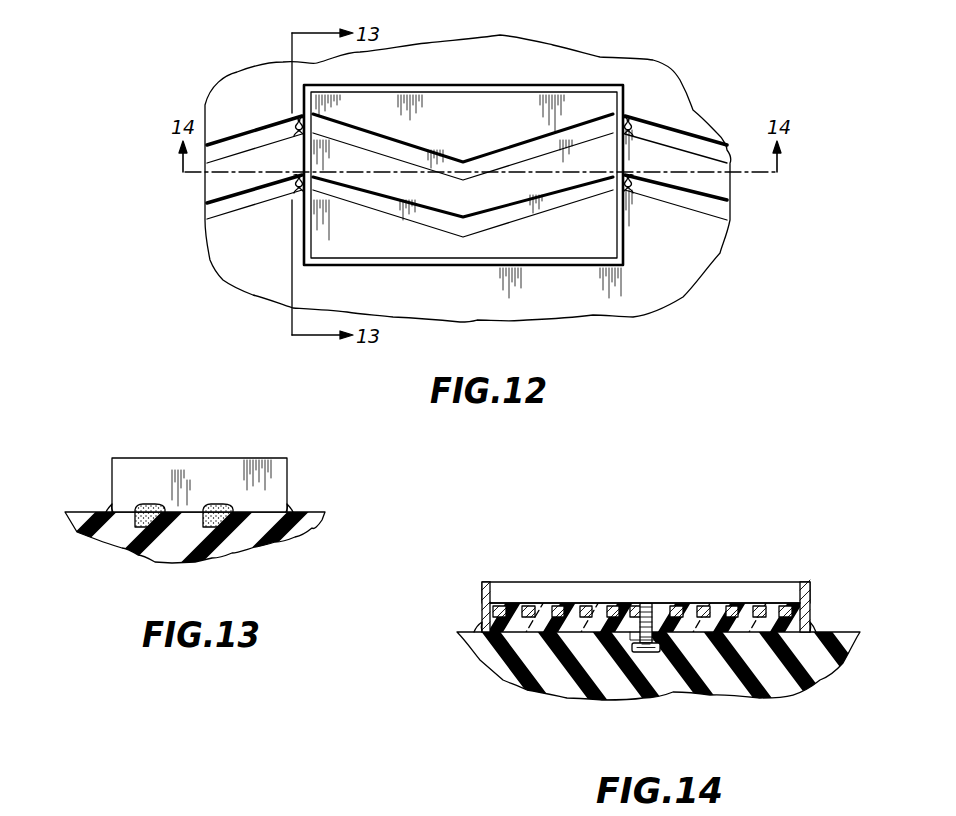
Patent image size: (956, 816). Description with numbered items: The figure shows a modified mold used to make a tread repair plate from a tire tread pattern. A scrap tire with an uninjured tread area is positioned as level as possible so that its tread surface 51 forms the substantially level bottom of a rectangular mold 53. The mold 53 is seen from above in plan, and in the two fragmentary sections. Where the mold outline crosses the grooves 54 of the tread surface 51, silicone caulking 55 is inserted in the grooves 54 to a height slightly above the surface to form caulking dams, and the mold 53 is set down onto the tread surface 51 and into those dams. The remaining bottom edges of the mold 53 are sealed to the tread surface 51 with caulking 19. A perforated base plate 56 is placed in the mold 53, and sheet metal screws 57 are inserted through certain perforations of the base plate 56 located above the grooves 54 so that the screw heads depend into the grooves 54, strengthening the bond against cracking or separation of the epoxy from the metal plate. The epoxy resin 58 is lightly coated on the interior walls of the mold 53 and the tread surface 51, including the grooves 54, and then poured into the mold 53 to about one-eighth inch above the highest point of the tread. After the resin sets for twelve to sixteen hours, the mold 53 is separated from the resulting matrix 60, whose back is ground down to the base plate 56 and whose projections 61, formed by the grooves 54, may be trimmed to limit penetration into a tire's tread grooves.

In FIG. 12, the tread surface 51 is at (475, 110).
In FIG. 13, the tread surface 51 is at (315, 512).
In FIG. 14, the tread surface 51 is at (845, 632).
In FIG. 12, the mold 53 is at (600, 85).
In FIG. 13, the mold 53 is at (153, 458).
In FIG. 14, the mold 53 is at (485, 582).
In FIG. 12, the grooves 54 is at (358, 193).
In FIG. 14, the grooves 54 is at (664, 654).
In FIG. 12, the silicone caulking 55 is at (296, 182).
In FIG. 13, the silicone caulking 55 is at (157, 505).
In FIG. 13, the caulking 19 is at (108, 508).
In FIG. 14, the caulking 19 is at (478, 630).
In FIG. 14, the perforated base plate 56 is at (555, 608).
In FIG. 14, the sheet metal screws 57 is at (654, 614).
In FIG. 14, the epoxy resin 58 is at (713, 623).
In FIG. 14, the matrix 60 is at (763, 601).
In FIG. 14, the projections 61 is at (622, 654).